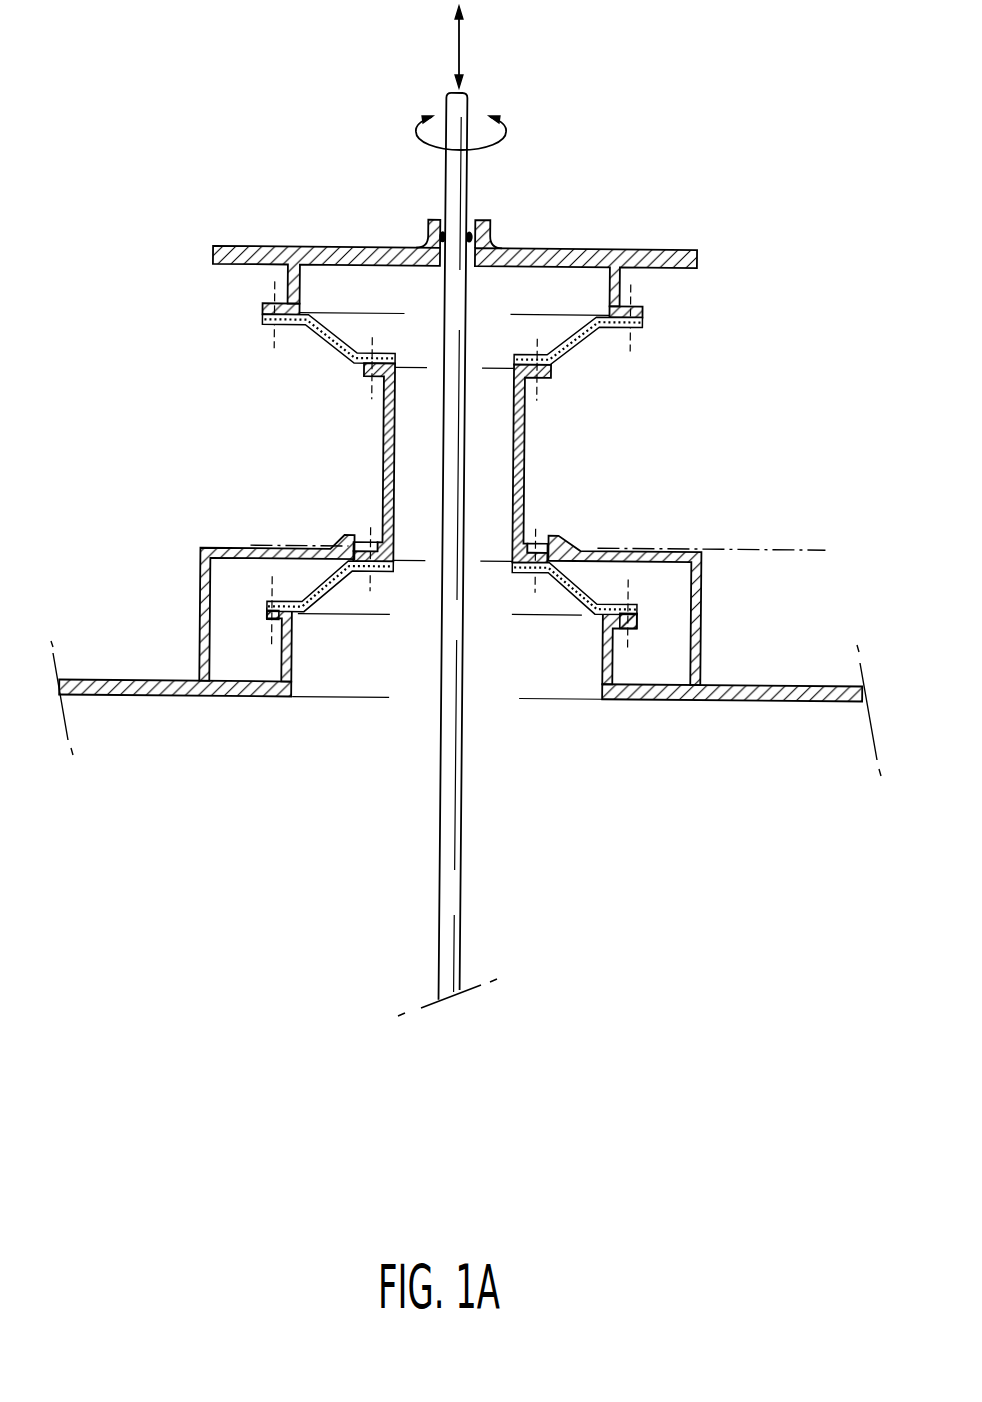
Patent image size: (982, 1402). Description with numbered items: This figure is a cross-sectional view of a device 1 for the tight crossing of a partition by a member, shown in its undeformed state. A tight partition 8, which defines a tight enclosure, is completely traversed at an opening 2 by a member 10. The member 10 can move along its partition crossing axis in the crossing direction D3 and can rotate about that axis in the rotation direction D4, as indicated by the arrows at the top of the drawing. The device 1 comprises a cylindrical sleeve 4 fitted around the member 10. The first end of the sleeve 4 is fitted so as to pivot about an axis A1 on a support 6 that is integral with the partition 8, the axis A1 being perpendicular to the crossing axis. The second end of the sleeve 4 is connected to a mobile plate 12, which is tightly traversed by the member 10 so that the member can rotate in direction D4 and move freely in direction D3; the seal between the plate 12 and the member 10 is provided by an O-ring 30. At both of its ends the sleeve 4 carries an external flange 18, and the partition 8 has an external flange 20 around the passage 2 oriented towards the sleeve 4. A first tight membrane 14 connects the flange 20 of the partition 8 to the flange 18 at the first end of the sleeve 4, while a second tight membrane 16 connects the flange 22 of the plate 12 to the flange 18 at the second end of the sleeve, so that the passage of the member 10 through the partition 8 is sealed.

The device 1 is at (462, 547).
The opening 2 is at (312, 675).
The sleeve 4 is at (531, 440).
The support 6 is at (702, 597).
The tight partition 8 is at (763, 693).
The member 10 is at (444, 808).
The mobile plate 12 is at (380, 250).
The first tight membrane 14 is at (345, 567).
The second tight membrane 16 is at (333, 353).
The external flange 18 is at (372, 540).
The external flange 20 is at (268, 610).
The flange 22 is at (278, 299).
The O-ring 30 is at (486, 247).
The partition crossing direction D3 is at (456, 48).
The rotation direction D4 is at (503, 125).
The axis A1 is at (796, 548).